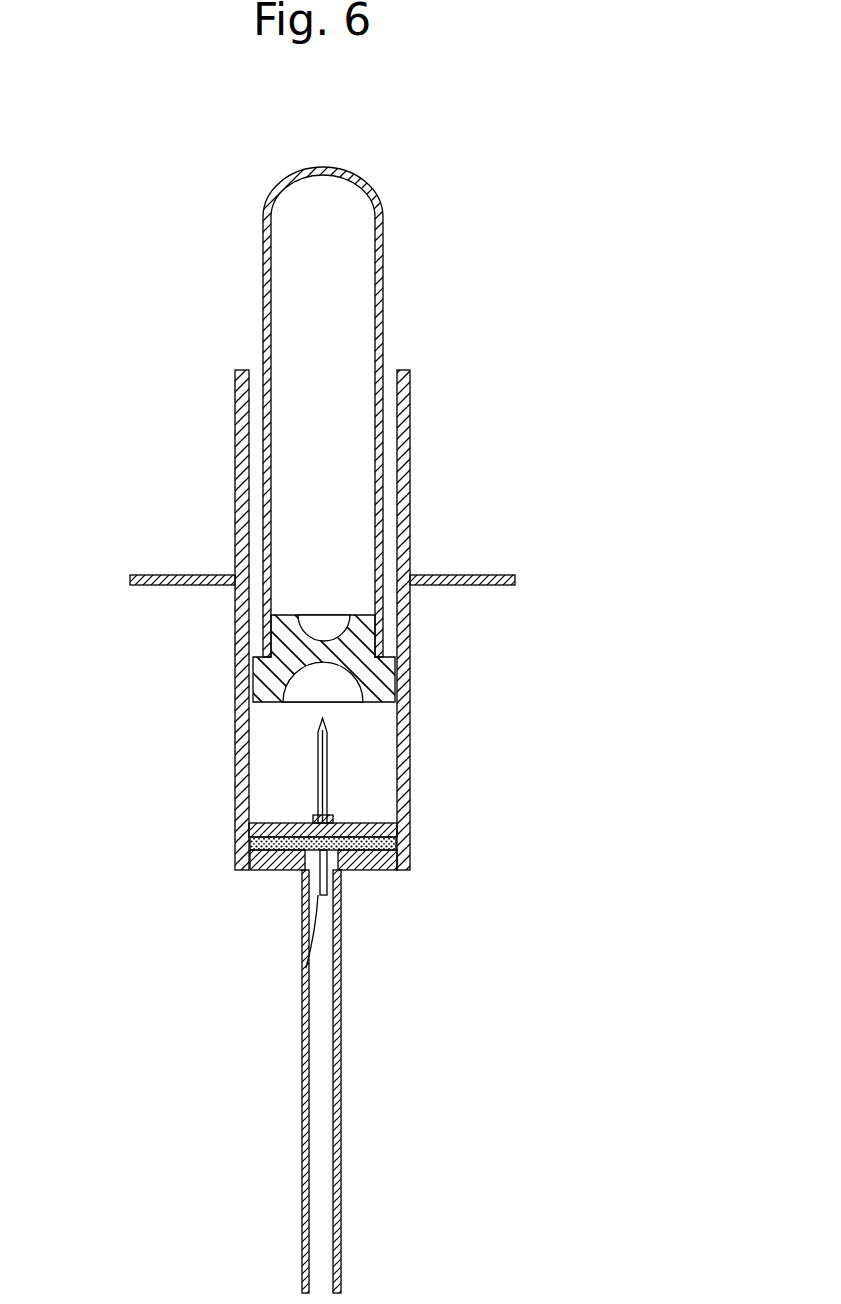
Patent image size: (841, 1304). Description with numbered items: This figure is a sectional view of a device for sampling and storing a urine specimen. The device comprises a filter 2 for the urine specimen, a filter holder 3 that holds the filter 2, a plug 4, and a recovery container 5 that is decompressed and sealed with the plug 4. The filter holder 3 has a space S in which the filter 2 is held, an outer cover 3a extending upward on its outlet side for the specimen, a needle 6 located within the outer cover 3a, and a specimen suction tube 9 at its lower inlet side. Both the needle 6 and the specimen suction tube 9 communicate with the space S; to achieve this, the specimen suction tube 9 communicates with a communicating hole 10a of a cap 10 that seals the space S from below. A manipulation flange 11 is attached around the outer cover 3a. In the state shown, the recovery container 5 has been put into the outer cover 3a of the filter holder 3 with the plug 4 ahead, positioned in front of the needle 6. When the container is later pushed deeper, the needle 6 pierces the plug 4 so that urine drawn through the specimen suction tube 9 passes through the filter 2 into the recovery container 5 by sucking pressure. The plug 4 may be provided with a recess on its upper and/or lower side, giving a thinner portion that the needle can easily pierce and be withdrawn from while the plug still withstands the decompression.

The filter 2 is at (355, 823).
The filter holder 3 is at (412, 690).
The outer cover 3a is at (235, 742).
The plug 4 is at (260, 665).
The recovery container 5 is at (262, 258).
The needle 6 is at (318, 786).
The specimen suction tube 9 is at (341, 1072).
The cap 10 is at (375, 870).
The communicating hole 10a is at (305, 968).
The manipulation flange 11 is at (460, 575).
The space S is at (277, 870).